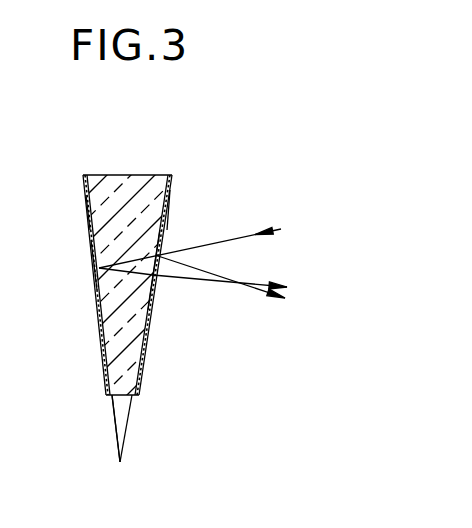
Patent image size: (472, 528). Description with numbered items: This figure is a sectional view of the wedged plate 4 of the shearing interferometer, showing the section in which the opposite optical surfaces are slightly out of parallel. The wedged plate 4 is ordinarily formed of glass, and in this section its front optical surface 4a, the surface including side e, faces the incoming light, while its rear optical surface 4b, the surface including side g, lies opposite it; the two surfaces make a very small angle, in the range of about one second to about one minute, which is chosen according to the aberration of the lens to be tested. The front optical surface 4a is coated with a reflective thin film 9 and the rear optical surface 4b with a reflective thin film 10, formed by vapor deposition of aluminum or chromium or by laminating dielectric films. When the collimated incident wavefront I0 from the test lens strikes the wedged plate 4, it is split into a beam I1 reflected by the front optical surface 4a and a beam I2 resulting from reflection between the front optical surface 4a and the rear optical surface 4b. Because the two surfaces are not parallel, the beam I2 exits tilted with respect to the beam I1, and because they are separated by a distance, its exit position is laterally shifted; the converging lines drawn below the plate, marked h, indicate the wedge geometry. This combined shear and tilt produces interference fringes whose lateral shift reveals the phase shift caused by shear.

The wedged plate 4 is at (128, 172).
The front optical surface 4a is at (142, 348).
The rear optical surface 4b is at (100, 310).
The reflective thin film 9 is at (152, 305).
The reflective thin film 10 is at (91, 253).
The side g is at (88, 210).
The side e is at (170, 218).
The height of prism h is at (113, 413).
The incident wavefront I0 is at (250, 233).
The reflected beam I1 is at (258, 302).
The reflected beam I2 is at (258, 280).